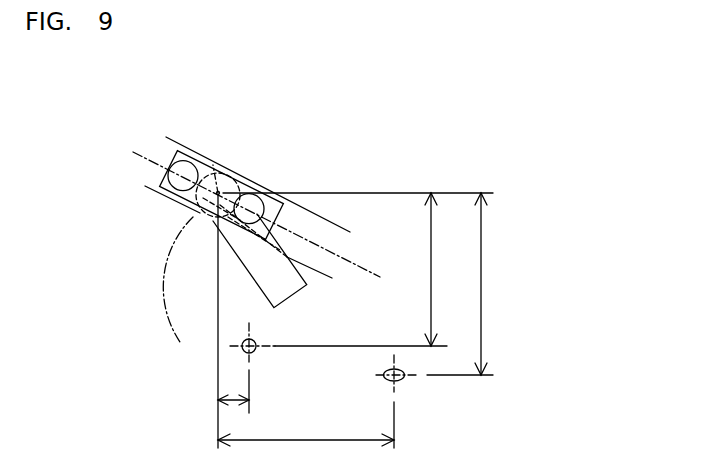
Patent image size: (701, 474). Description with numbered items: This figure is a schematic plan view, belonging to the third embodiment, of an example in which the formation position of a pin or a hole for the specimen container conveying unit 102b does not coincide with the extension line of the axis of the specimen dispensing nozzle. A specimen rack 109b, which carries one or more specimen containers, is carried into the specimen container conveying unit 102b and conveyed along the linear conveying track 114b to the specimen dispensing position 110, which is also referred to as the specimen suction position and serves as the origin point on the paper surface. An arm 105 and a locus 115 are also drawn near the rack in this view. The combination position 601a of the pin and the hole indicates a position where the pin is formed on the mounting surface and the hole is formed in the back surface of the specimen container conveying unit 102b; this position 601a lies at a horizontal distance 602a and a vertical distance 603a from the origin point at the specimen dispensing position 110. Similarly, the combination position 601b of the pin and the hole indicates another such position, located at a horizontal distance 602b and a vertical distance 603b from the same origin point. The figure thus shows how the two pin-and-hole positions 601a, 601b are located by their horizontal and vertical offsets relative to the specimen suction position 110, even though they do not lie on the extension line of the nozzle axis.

The specimen container conveying unit 102b is at (306, 200).
The arm 105 is at (278, 296).
The specimen rack 109b is at (202, 163).
The specimen dispensing position 110 is at (219, 192).
The linear conveying track 114b is at (152, 160).
The movement locus 115 is at (172, 265).
The combination position of the pin and the hole 601a is at (242, 341).
The combination position of the pin and the hole 601b is at (402, 380).
The horizontal distance 602a is at (222, 400).
The horizontal distance 602b is at (222, 435).
The vertical distance 603a is at (431, 252).
The vertical distance 603b is at (480, 303).